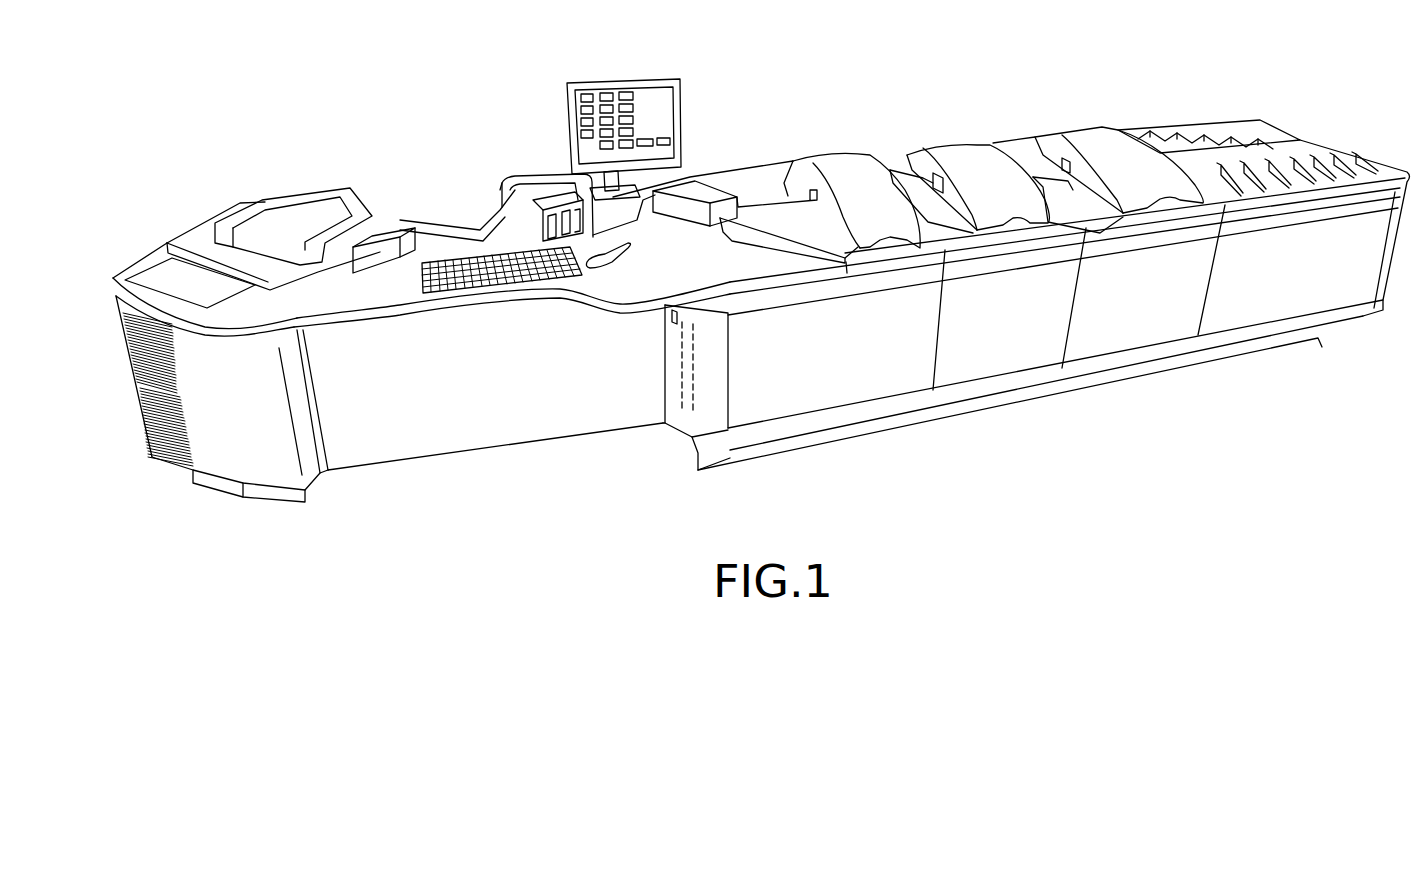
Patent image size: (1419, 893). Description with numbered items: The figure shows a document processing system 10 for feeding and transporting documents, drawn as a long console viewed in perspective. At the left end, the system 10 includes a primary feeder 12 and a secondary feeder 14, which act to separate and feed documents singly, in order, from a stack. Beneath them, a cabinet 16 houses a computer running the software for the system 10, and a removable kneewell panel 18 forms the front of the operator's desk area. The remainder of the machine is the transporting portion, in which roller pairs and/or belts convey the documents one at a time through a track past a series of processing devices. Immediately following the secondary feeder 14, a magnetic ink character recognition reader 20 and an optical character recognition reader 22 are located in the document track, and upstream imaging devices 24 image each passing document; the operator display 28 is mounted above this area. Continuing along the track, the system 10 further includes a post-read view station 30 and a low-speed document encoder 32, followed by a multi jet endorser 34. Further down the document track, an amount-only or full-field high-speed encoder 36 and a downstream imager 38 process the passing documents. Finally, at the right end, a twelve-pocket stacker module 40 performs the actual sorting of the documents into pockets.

The document processing system 10 is at (964, 102).
The primary feeder 12 is at (298, 230).
The secondary feeder 14 is at (373, 260).
The cabinet 16 is at (252, 428).
The removable kneewell panel 18 is at (473, 392).
The magnetic ink character recognition (MICR) reader 20 is at (618, 215).
The optical character recognition (OCR) reader 22 is at (543, 207).
The upstream imaging devices 24 is at (560, 183).
The operator display 28 is at (607, 123).
The post-read view station 30 is at (695, 182).
The low-speed document encoder 32 is at (777, 220).
The multi jet endorser (MJE) 34 is at (895, 208).
The high-speed encoder 36 is at (993, 337).
The downstream imager 38 is at (1127, 303).
The 12-pocket stacker module 40 is at (1270, 287).